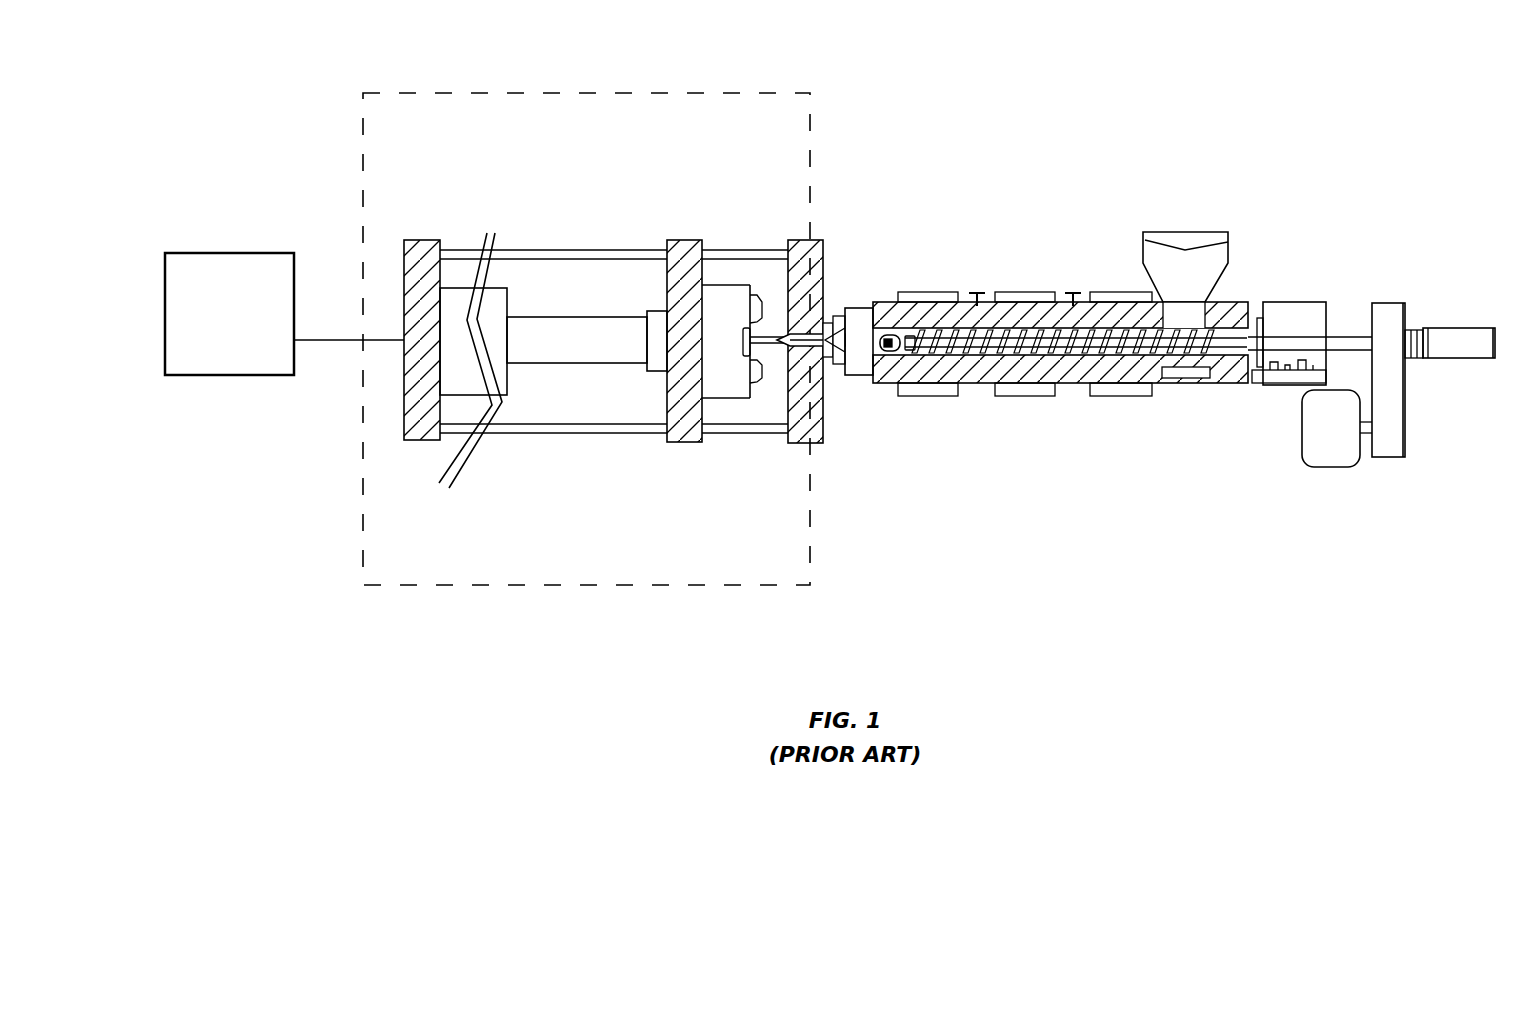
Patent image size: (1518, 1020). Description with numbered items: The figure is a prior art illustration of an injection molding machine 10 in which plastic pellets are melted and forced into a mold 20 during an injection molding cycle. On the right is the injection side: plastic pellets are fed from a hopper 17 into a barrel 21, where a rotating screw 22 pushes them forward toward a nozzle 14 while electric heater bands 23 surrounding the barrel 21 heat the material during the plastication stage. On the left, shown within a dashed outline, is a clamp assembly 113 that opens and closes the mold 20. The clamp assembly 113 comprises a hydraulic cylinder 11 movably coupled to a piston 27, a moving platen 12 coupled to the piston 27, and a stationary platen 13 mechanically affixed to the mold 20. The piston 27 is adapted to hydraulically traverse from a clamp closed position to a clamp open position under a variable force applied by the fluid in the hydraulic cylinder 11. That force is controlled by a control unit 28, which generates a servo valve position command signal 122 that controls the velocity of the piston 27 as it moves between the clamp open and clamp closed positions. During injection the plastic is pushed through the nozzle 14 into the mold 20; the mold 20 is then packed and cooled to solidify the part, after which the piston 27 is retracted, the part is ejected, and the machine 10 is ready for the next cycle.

The injection molding machine 10 is at (1287, 46).
The clamp assembly 113 is at (582, 93).
The control unit 28 is at (215, 253).
The servo valve position command signal 122 is at (350, 342).
The hydraulic cylinder 11 is at (450, 287).
The piston 27 is at (587, 364).
The moving platen 12 is at (683, 240).
The mold 20 is at (738, 400).
The nozzle 14 is at (800, 355).
The stationary platen 13 is at (826, 255).
The barrel 21 is at (887, 383).
The rotating screw 22 is at (993, 353).
The electric heater bands 23 is at (1120, 396).
The hopper 17 is at (1210, 232).